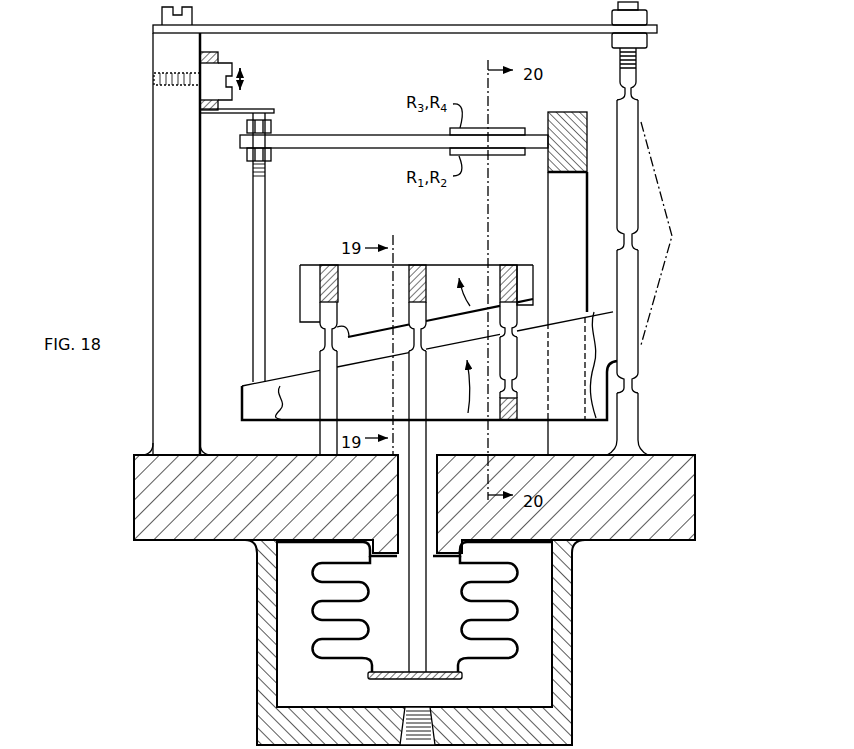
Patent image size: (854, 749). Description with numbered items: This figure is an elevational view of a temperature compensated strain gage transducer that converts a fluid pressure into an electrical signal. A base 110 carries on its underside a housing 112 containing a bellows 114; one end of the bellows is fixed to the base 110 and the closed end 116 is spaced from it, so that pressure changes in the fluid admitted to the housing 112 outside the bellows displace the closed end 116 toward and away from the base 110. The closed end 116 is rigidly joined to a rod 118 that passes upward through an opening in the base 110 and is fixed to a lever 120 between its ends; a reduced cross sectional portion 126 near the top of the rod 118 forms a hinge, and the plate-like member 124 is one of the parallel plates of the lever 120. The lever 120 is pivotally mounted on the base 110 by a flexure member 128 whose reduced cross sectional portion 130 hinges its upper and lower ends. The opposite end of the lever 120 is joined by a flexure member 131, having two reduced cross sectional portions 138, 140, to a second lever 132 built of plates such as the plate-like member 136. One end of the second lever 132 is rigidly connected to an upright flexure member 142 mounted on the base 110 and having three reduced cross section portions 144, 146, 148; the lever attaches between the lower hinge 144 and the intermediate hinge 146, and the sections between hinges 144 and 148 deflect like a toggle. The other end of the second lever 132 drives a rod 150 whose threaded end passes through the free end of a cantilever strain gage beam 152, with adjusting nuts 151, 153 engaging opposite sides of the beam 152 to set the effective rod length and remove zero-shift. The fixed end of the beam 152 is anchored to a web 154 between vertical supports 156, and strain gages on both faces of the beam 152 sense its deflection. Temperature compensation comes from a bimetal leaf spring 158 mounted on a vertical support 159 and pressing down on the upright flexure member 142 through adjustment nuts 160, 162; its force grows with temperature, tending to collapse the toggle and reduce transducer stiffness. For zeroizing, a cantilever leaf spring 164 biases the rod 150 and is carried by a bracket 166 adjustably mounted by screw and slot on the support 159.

The base 110 is at (696, 497).
The housing 112 is at (573, 684).
The bellows 114 is at (338, 659).
The closed end of the bellows 116 is at (442, 679).
The rod 118 is at (426, 437).
The lever 120 is at (456, 262).
The plate-like member 124 is at (307, 263).
The reduced cross sectional portion 126 is at (422, 338).
The flexure member 128 is at (337, 386).
The reduced cross sectional portion 130 is at (321, 336).
The flexure member 131 is at (509, 360).
The second lever 132 is at (577, 294).
The plate-like member 136 is at (297, 424).
The reduced cross sectional portion 138 is at (511, 342).
The reduced cross sectional portion 140 is at (511, 383).
The upright flexure member 142 is at (636, 199).
The reduced cross section portion 144 is at (632, 383).
The reduced cross section portion 146 is at (632, 239).
The reduced cross section portion 148 is at (631, 94).
The rod 150 is at (253, 296).
The adjusting nut 151 is at (272, 158).
The strain gage beam 152 is at (362, 121).
The adjusting nut 153 is at (272, 128).
The web 154 is at (553, 175).
The vertical support 156 is at (560, 211).
The bimetal leaf spring 158 is at (446, 26).
The vertical support 159 is at (153, 190).
The adjustment nut 160 is at (648, 17).
The adjustment nut 162 is at (648, 40).
The cantilever leaf spring 164 is at (260, 109).
The bracket 166 is at (219, 56).